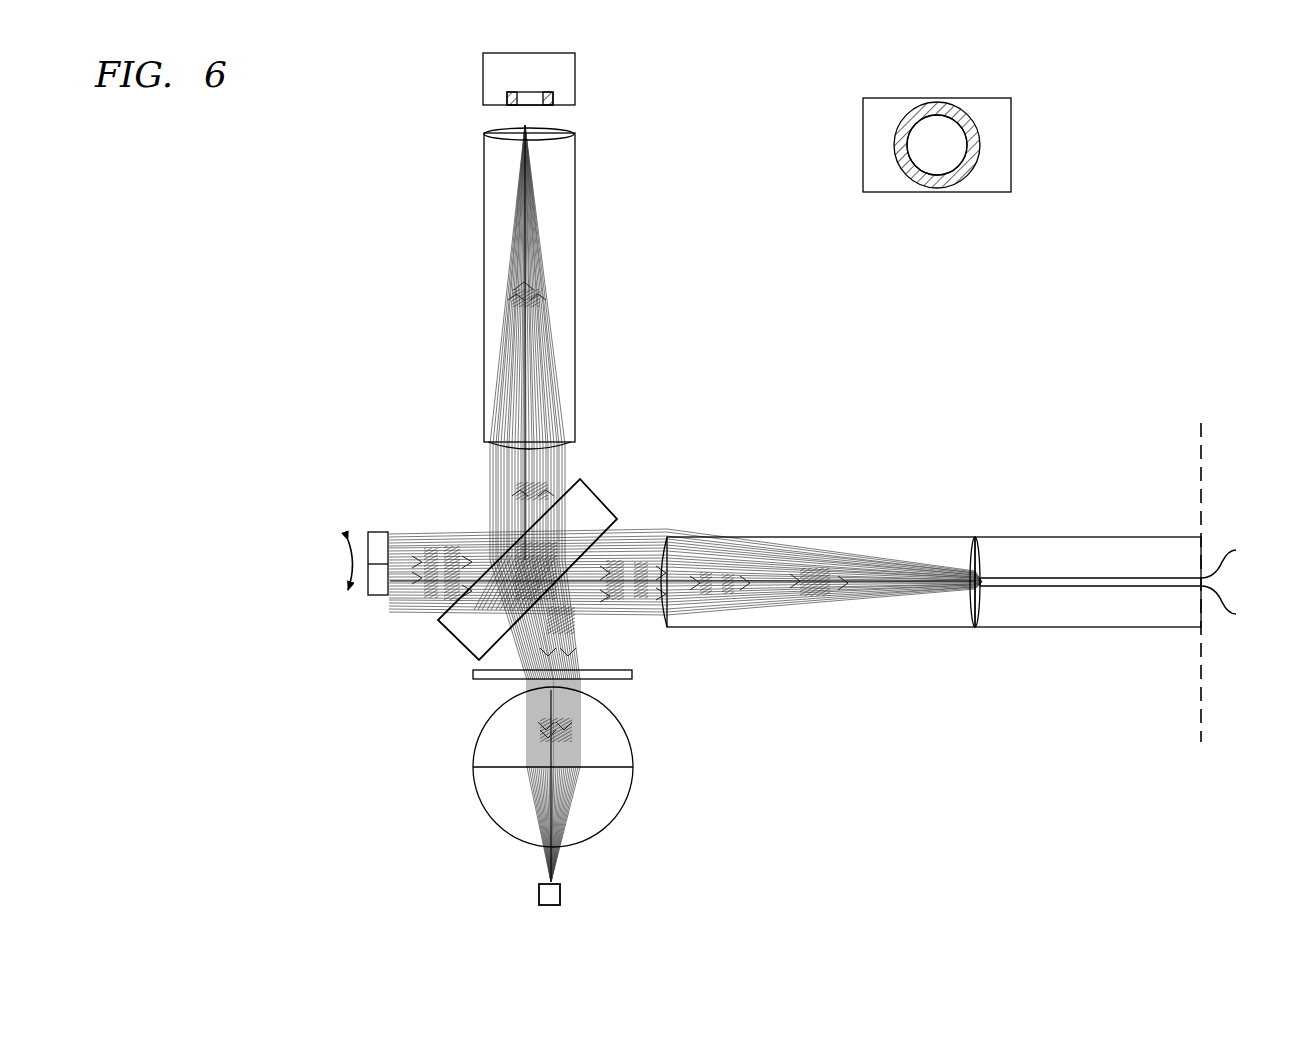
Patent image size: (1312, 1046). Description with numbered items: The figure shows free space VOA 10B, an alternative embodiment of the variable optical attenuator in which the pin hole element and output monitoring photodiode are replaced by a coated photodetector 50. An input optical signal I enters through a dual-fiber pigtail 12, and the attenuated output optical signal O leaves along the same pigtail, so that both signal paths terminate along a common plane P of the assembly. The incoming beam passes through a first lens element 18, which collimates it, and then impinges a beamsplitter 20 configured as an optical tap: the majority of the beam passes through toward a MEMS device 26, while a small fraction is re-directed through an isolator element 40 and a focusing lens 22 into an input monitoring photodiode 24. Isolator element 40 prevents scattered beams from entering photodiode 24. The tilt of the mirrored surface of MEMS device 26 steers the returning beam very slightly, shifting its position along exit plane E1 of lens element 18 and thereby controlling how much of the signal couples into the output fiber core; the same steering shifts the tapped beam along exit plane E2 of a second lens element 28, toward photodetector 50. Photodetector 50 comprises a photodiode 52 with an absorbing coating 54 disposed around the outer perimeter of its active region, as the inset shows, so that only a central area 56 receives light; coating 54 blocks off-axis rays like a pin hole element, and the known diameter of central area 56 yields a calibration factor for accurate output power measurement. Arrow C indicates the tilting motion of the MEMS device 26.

The free space VOA 10B is at (213, 162).
The dual-fiber pigtail 12 is at (1092, 552).
The first lens element 18 is at (887, 552).
The beamsplitter 20 is at (466, 630).
The focusing lens 22 is at (616, 742).
The input monitoring photodiode 24 is at (562, 895).
The MEMS device 26 is at (378, 535).
The second lens element 28 is at (565, 350).
The isolator element 40 is at (633, 674).
The photodetector 50 is at (570, 78).
The photodiode 52 is at (530, 92).
The absorbing coating 54 is at (512, 104).
The central area 56 is at (916, 150).
The exit plane E1 is at (975, 628).
The exit plane E2 is at (574, 134).
The common plane P is at (1200, 694).
The attenuated output optical signal O is at (1240, 546).
The input optical signal I is at (1244, 620).
The control direction C is at (330, 563).